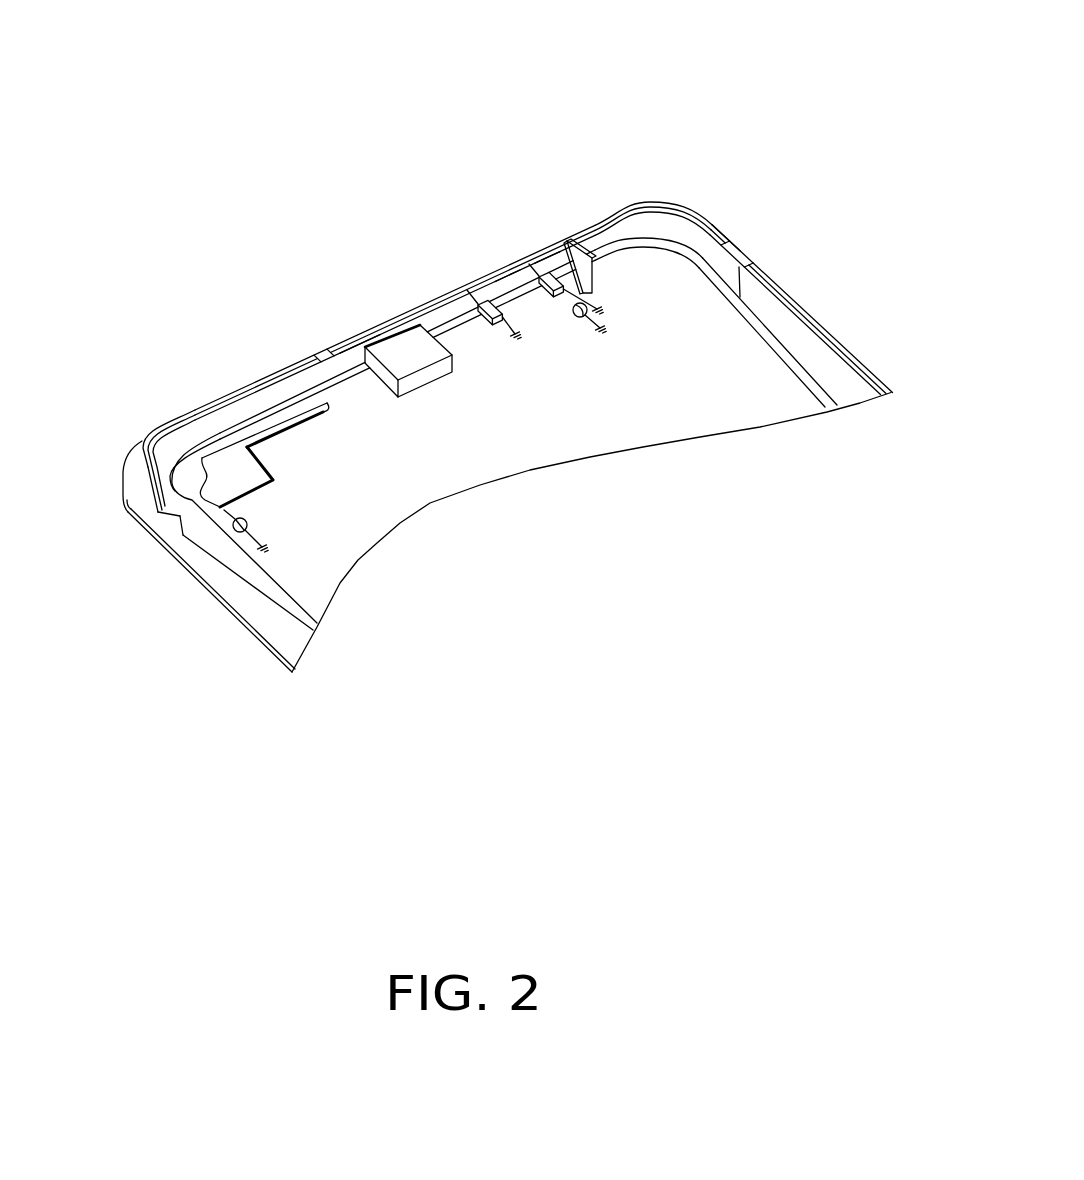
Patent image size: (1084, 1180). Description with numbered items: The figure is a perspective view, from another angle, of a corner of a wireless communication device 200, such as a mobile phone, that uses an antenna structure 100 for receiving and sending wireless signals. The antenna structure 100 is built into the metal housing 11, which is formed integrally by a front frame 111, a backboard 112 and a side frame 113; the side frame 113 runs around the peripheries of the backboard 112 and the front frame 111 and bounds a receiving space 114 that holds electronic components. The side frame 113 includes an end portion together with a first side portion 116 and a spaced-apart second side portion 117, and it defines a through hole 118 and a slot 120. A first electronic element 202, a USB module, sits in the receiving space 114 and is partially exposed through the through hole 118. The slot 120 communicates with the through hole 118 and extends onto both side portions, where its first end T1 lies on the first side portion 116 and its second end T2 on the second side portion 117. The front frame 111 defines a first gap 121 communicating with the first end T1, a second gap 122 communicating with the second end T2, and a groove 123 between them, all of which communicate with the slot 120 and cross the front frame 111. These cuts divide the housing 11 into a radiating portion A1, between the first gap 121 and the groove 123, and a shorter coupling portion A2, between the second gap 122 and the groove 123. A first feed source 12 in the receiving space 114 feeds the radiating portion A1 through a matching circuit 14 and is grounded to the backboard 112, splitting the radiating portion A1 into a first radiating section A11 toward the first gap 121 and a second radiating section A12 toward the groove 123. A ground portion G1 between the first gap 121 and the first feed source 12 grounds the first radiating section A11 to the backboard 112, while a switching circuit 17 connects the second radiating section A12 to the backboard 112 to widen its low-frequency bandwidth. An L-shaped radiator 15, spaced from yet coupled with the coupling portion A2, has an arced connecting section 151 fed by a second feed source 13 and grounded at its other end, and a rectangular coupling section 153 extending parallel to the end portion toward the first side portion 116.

The wireless communication device 200 is at (515, 38).
The antenna structure 100 is at (705, 166).
The housing 11 is at (952, 464).
The front frame 111 is at (888, 394).
The backboard 112 is at (828, 388).
The side frame 113 is at (853, 392).
The receiving space 114 is at (630, 430).
The first side portion 116 is at (790, 330).
The second side portion 117 is at (243, 607).
The through hole 118 is at (350, 360).
The first feed source 12 is at (593, 307).
The slot 120 is at (347, 352).
The first gap 121 is at (737, 246).
The second gap 122 is at (177, 517).
The groove 123 is at (317, 348).
The second feed source 13 is at (247, 525).
The matching circuit 14 is at (553, 274).
The radiator 15 is at (507, 528).
The connecting section 151 is at (250, 482).
The coupling section 153 is at (297, 422).
The switching circuit 17 is at (485, 299).
The first electronic element 202 is at (417, 360).
The radiating portion A1 is at (550, 178).
The first radiating section A11 is at (547, 258).
The second radiating section A12 is at (507, 270).
The coupling portion A2 is at (138, 443).
The ground portion G1 is at (586, 301).
The first end T1 is at (742, 286).
The second end T2 is at (183, 536).